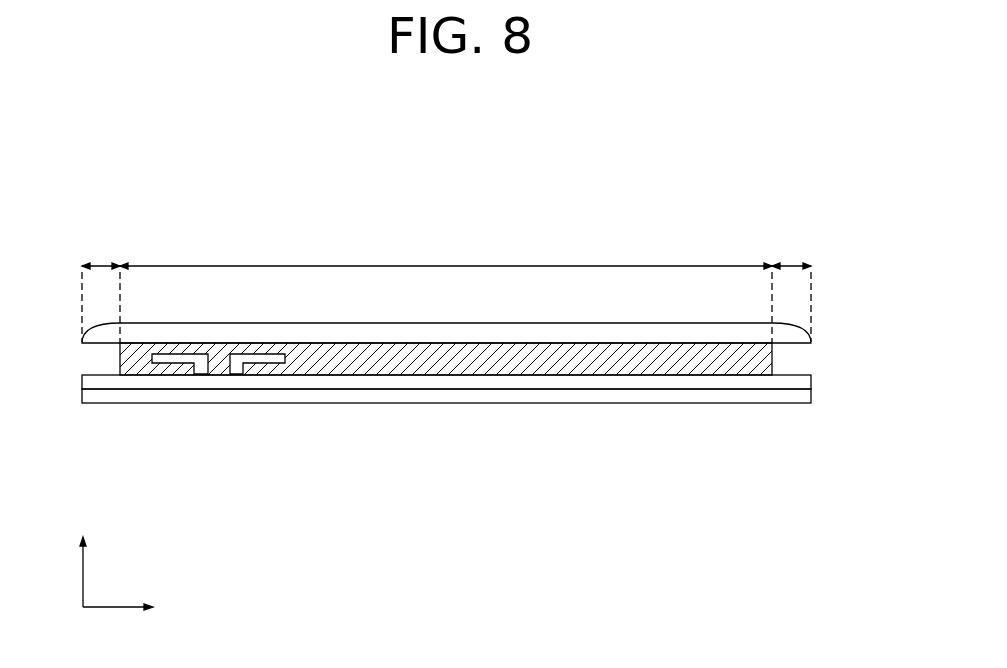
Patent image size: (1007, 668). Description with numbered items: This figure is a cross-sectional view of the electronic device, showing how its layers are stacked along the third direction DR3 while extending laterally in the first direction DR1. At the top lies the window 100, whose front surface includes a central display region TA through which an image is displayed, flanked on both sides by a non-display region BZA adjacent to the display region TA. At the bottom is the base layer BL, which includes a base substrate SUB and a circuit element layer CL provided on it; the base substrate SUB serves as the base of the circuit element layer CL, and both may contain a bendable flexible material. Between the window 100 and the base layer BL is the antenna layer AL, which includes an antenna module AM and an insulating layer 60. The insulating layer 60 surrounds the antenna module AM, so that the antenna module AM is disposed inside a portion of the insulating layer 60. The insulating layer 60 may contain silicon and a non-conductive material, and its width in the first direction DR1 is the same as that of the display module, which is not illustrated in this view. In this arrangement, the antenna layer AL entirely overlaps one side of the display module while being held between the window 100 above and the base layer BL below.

The window 100 is at (800, 338).
The insulating layer 60 is at (313, 375).
The antenna module AM is at (218, 411).
The antenna layer AL is at (440, 429).
The circuit element layer CL is at (800, 383).
The base substrate SUB is at (800, 397).
The base layer BL is at (509, 395).
The non-display region BZA is at (446, 289).
The display region TA is at (446, 254).
The first direction DR1 is at (139, 607).
The third direction DR3 is at (84, 558).